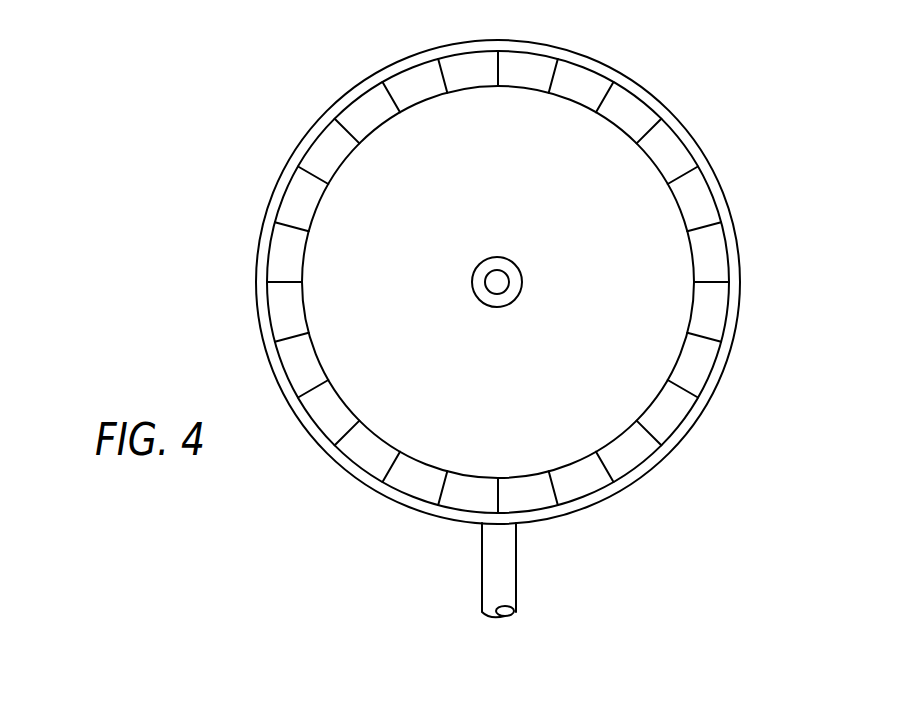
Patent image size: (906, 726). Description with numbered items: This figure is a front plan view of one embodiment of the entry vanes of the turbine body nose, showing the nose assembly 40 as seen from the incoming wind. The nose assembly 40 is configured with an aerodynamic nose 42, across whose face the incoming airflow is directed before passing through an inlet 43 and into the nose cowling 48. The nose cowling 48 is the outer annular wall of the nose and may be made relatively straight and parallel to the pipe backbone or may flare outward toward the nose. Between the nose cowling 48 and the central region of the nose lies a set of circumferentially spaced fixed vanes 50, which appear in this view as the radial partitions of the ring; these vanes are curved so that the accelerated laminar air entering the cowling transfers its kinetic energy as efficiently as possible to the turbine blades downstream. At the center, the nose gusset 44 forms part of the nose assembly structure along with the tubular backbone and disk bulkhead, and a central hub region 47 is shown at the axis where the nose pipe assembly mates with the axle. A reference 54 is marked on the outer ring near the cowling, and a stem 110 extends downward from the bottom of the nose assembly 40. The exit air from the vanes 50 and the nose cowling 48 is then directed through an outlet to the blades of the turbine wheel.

The nose assembly 40 is at (190, 251).
The aerodynamic nose 42 is at (582, 382).
The inlet 43 is at (363, 117).
The nose gusset 44 is at (522, 282).
The shaft bore 47 is at (493, 270).
The nose cowling 48 is at (583, 53).
The fixed vanes 50 is at (650, 125).
The rim ring 54 is at (513, 282).
The stem 110 is at (500, 560).